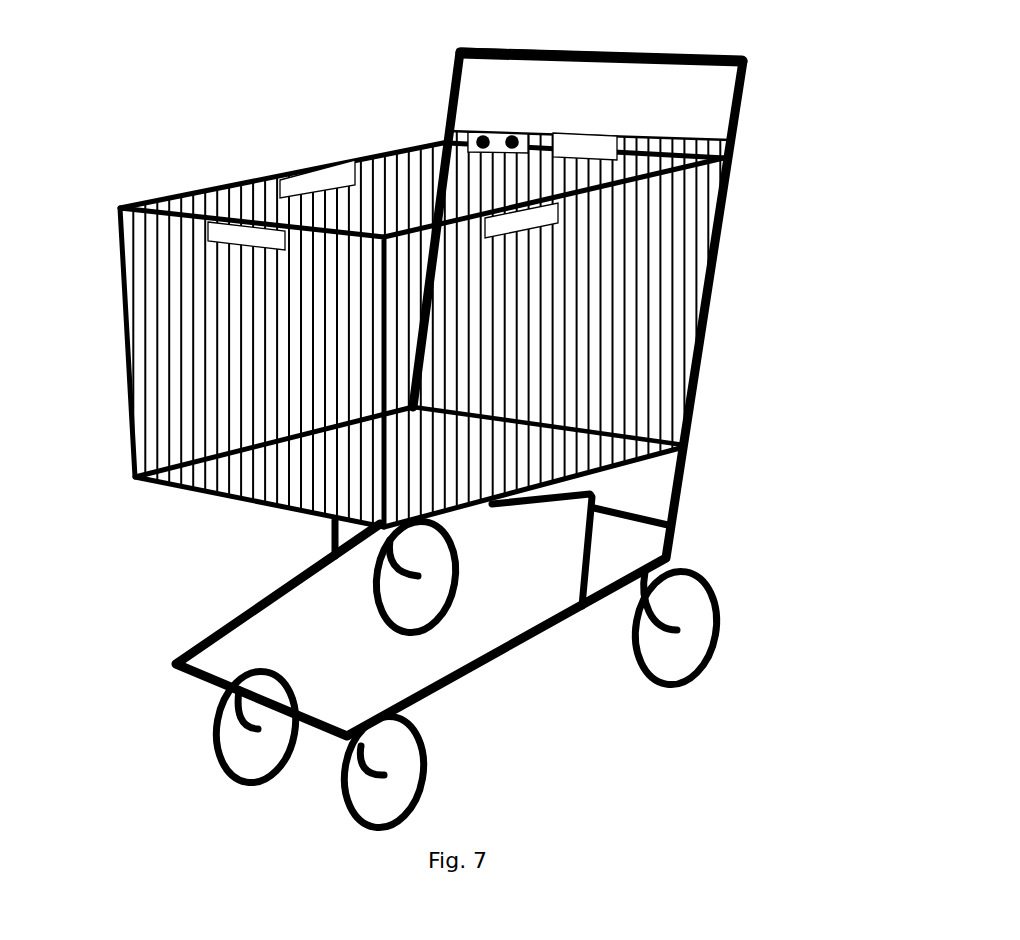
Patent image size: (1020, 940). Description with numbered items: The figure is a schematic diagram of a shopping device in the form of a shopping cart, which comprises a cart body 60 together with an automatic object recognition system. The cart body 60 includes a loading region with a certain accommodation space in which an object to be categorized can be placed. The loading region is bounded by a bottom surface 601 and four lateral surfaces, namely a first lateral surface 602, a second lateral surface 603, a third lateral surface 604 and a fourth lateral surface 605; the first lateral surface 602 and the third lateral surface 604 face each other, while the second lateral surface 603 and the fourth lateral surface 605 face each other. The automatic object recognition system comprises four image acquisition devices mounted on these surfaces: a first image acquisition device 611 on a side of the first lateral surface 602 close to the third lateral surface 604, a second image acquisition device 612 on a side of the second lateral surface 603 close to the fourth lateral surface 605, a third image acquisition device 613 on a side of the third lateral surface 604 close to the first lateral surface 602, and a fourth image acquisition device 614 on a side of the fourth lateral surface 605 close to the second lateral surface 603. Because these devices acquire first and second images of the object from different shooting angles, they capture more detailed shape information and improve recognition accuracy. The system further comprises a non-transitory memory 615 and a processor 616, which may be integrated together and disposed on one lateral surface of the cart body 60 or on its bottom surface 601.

The cart body 60 is at (742, 108).
The bottom surface 601 is at (593, 477).
The first lateral surface 602 is at (657, 137).
The second lateral surface 603 is at (643, 176).
The third lateral surface 604 is at (122, 322).
The fourth lateral surface 605 is at (217, 188).
The first image acquisition device 611 is at (590, 140).
The second image acquisition device 612 is at (540, 222).
The third image acquisition device 613 is at (217, 235).
The fourth image acquisition device 614 is at (340, 175).
The non-transitory memory 615 is at (477, 129).
The processor 616 is at (512, 133).